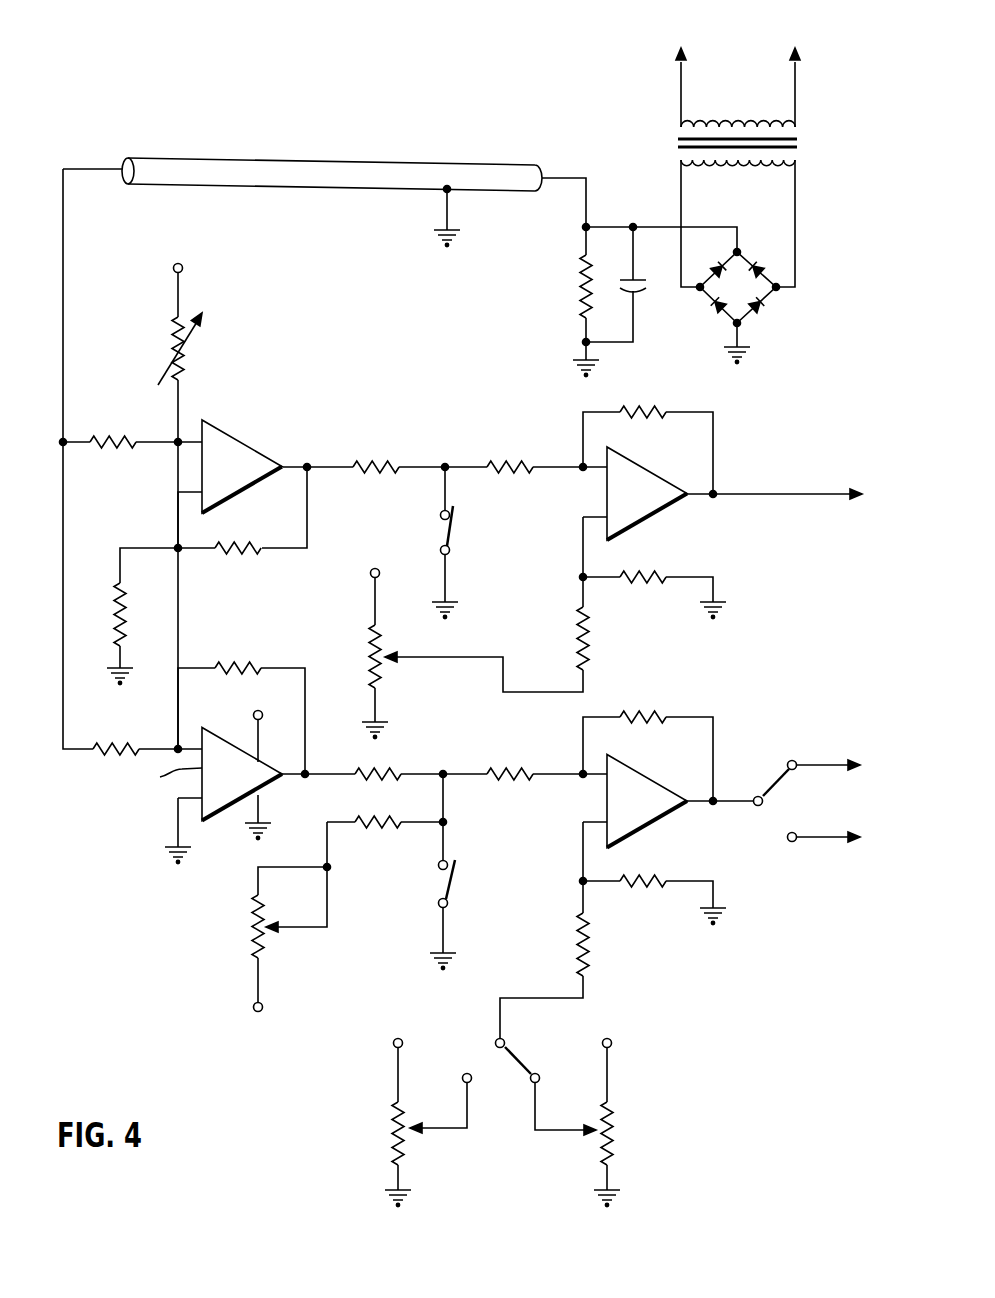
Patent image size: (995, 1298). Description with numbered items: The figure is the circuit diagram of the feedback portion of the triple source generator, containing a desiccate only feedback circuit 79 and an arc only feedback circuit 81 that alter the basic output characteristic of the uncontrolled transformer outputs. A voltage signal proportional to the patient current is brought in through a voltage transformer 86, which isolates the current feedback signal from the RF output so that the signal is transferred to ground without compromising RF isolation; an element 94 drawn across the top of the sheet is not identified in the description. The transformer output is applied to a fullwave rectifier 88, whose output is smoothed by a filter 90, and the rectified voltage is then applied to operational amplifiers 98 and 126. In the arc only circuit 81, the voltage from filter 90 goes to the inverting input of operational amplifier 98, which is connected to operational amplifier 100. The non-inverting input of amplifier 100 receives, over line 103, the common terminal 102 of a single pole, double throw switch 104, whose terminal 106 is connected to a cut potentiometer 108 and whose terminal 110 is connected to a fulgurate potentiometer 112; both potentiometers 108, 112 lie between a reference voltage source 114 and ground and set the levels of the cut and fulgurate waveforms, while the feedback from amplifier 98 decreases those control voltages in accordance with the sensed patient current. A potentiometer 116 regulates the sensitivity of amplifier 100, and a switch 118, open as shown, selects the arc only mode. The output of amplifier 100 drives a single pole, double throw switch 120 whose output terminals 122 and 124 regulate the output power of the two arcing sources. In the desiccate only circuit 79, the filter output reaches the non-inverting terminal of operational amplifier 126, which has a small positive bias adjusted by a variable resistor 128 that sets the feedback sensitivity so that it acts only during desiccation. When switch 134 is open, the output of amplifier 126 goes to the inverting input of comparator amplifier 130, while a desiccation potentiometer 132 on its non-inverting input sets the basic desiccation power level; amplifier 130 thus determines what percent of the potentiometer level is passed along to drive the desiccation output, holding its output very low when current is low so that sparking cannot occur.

The desiccate only feedback circuit 79 is at (455, 445).
The arc only feedback circuit 81 is at (432, 751).
The voltage transformer 86 is at (797, 139).
The fullwave rectifier 88 is at (770, 293).
The filter 90 is at (579, 301).
The shielded cable 94 is at (348, 158).
The operational amplifier 98 is at (236, 791).
The operational amplifier 100 is at (658, 838).
The common terminal 102 is at (506, 1042).
The line 103 is at (528, 996).
The single pole, double throw switch 104 is at (504, 1053).
The terminal 106 is at (473, 1085).
The cut potentiometer 108 is at (390, 1112).
The terminal 110 is at (532, 1085).
The fulgurate potentiometer 112 is at (615, 1128).
The reference voltage source 114 is at (396, 1038).
The potentiometer 116 is at (250, 926).
The switch 118 is at (452, 881).
The single pole, double throw switch 120 is at (779, 785).
The output terminal 122 is at (792, 759).
The output terminal 124 is at (794, 844).
The operational amplifier 126 is at (250, 455).
The variable resistor 128 is at (172, 338).
The operational amplifier 130 is at (660, 527).
The desiccation potentiometer 132 is at (370, 640).
The switch 134 is at (455, 530).